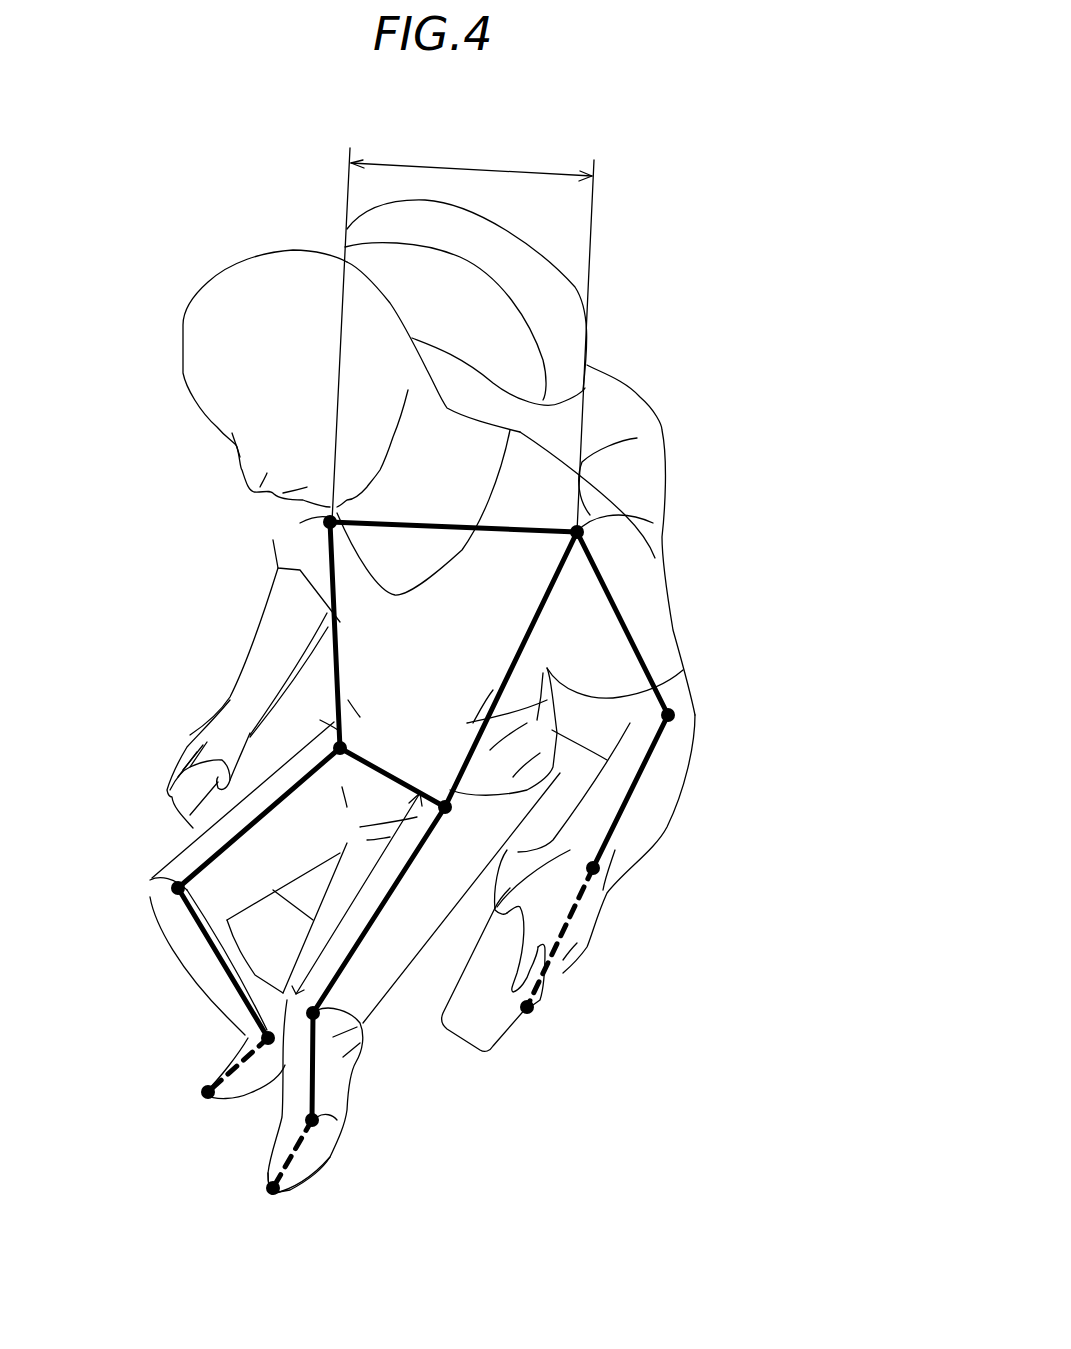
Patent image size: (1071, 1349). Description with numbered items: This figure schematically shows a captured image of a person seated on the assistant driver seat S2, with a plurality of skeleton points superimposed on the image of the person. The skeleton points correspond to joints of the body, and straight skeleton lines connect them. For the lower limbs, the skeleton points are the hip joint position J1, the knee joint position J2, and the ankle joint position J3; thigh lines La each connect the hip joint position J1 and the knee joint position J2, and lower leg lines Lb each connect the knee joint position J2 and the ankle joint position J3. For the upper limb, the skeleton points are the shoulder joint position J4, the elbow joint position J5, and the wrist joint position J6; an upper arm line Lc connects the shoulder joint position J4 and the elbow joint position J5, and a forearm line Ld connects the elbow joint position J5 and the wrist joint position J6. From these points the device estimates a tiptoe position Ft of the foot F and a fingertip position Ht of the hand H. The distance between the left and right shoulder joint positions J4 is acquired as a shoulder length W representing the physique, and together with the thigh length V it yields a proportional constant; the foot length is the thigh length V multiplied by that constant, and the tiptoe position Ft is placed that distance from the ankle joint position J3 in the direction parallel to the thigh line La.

The shoulder length W is at (463, 335).
The assistant driver seat S2 is at (612, 400).
The shoulder joint position J4 is at (323, 522).
The upper arm line Lc is at (623, 620).
The elbow joint position J5 is at (672, 716).
The forearm line Ld is at (645, 784).
The wrist joint position J6 is at (598, 868).
The hand H is at (205, 732).
The fingertip position Ht is at (532, 1007).
The hip joint position J1 is at (343, 748).
The thigh line La is at (243, 830).
The thigh length V is at (357, 893).
The knee joint position J2 is at (173, 888).
The lower leg line Lb is at (218, 955).
The ankle joint position J3 is at (265, 1037).
The tiptoe position Ft is at (204, 1093).
The foot F is at (252, 1083).